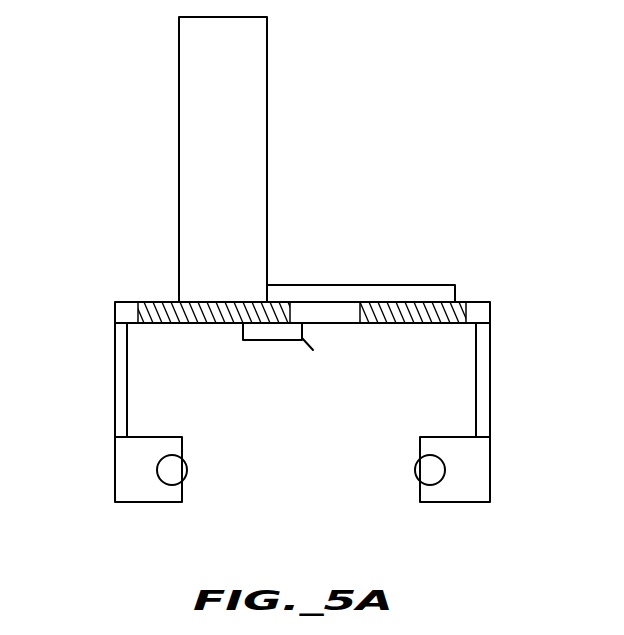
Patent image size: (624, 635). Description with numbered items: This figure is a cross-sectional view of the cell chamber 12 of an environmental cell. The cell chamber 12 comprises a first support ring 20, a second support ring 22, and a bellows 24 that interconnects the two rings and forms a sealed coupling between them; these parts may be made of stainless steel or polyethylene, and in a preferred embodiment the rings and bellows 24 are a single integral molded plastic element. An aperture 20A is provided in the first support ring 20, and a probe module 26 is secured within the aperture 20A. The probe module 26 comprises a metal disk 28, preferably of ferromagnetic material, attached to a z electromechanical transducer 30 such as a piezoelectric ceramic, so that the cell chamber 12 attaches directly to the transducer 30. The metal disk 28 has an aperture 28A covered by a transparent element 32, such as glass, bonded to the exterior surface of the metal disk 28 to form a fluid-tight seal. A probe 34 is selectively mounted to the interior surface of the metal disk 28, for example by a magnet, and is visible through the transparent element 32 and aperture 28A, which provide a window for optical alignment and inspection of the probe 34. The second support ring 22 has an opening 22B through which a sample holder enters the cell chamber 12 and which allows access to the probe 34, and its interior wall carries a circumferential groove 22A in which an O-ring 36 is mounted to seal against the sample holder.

The cell chamber 12 is at (340, 88).
The z electromechanical transducer 30 is at (248, 180).
The transparent element 32 is at (410, 293).
The probe module 26 is at (145, 263).
The first support ring 20 is at (314, 329).
The aperture 20A is at (150, 302).
The metal disk 28 is at (442, 327).
The aperture 28A is at (332, 318).
The probe 34 is at (272, 342).
The bellows 24 is at (480, 382).
The second support ring 22 is at (339, 479).
The O-ring 36 is at (176, 470).
The circumferential groove 22A is at (426, 470).
The opening 22B is at (297, 462).